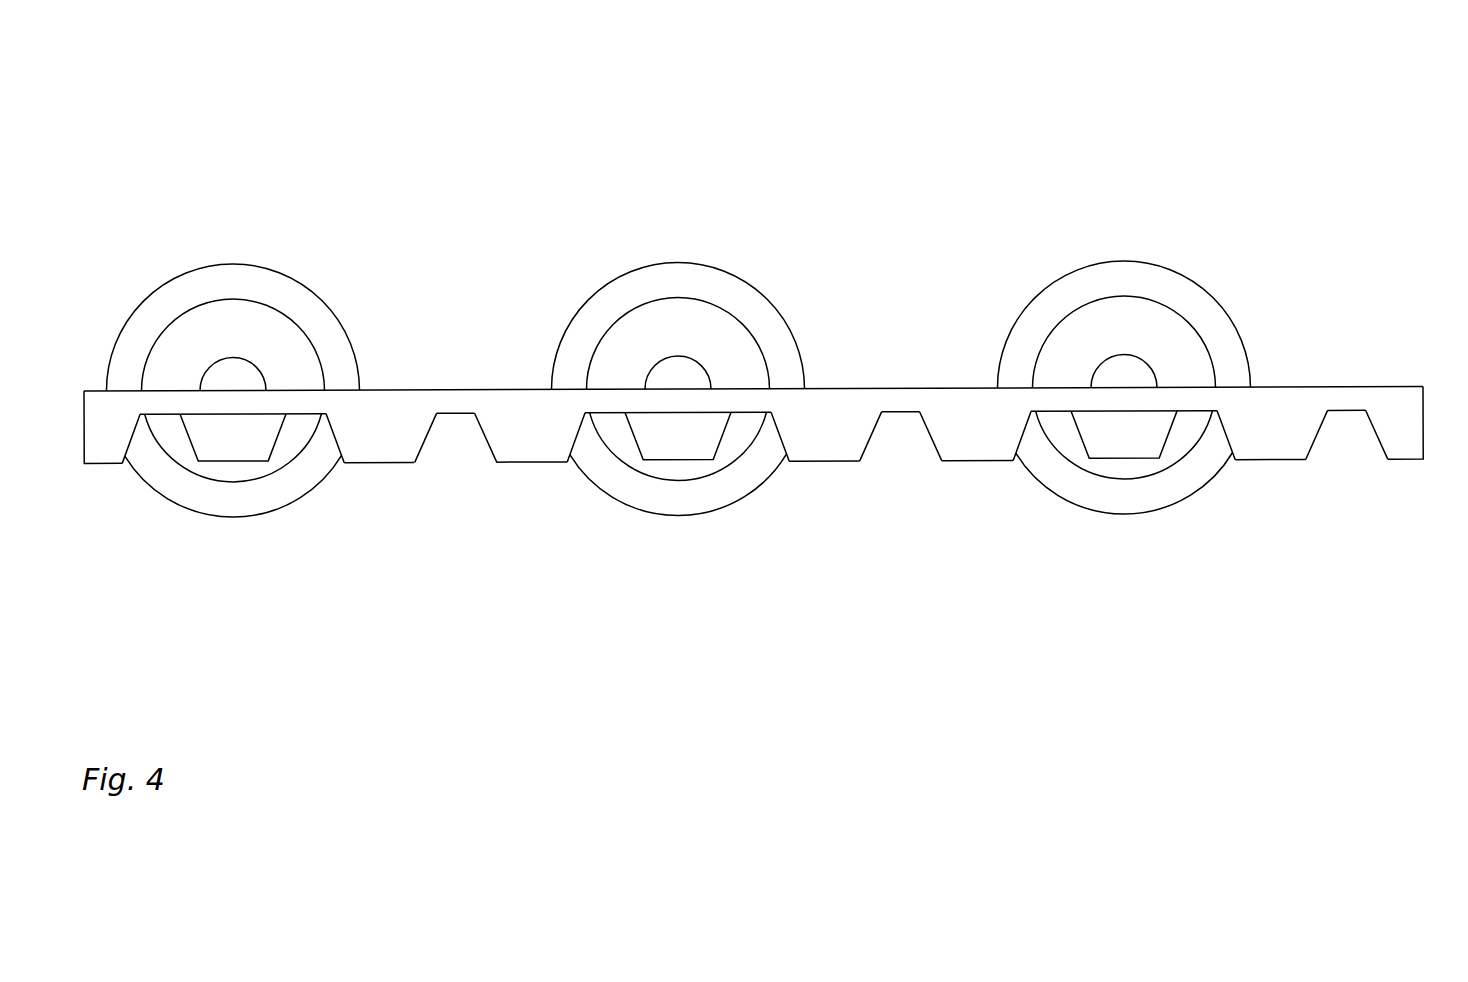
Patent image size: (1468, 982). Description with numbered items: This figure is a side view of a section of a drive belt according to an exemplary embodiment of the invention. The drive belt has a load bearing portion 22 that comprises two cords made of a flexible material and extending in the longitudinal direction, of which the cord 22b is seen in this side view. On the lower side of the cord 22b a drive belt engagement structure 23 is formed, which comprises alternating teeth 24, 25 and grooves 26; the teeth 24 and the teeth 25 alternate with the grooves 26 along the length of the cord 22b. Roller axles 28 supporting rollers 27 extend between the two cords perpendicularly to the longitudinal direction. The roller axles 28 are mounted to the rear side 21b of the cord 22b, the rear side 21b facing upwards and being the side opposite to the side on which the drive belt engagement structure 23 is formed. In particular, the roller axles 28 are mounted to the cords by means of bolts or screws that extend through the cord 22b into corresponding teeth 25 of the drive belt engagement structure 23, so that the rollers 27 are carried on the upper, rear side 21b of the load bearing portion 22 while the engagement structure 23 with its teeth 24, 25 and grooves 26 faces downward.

The load bearing portion 22 is at (770, 358).
The rear side 21b is at (911, 361).
The cord 22b is at (1400, 402).
The drive belt engagement structure 23 is at (472, 584).
The tooth 24 is at (383, 449).
The tooth 25 is at (240, 450).
The groove 26 is at (461, 480).
The roller 27 is at (282, 286).
The roller axle 28 is at (250, 366).